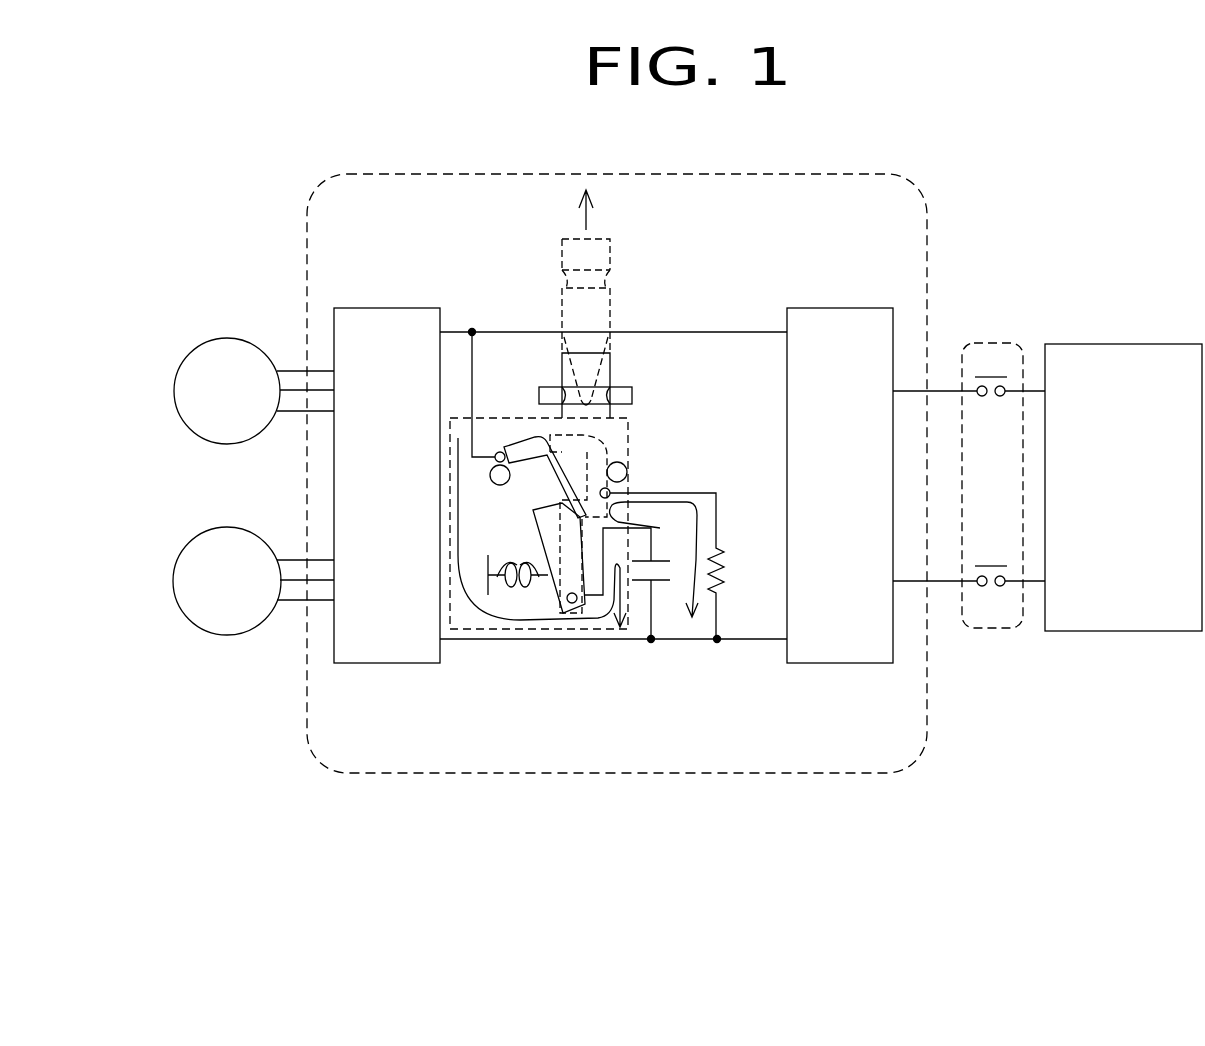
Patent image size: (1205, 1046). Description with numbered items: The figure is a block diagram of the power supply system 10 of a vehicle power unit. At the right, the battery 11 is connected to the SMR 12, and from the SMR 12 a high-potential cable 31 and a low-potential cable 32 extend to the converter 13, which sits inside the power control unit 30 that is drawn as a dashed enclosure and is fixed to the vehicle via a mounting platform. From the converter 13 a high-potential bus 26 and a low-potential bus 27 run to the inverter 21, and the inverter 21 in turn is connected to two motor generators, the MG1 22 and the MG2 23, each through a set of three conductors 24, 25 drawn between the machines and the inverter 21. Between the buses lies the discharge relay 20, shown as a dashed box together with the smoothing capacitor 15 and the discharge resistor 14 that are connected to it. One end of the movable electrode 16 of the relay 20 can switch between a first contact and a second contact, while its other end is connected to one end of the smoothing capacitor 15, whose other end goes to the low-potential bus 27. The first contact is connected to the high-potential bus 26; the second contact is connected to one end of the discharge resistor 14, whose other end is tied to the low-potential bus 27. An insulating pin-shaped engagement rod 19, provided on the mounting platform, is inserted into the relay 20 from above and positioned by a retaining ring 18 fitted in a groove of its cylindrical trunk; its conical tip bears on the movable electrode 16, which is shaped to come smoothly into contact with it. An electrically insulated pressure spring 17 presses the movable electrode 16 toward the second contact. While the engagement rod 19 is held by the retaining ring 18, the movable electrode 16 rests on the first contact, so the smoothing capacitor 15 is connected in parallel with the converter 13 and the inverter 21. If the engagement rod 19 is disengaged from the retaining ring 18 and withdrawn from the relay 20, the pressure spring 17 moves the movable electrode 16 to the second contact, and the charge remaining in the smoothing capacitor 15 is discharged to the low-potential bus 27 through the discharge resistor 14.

The power supply system 10 is at (698, 147).
The battery 11 is at (1112, 344).
The SMR 12 is at (997, 628).
The converter 13 is at (830, 309).
The discharge resistor 14 is at (724, 572).
The smoothing capacitor 15 is at (670, 606).
The movable electrode 16 is at (522, 440).
The pressure spring 17 is at (518, 565).
The retaining ring 18 is at (632, 396).
The engagement rod 19 is at (612, 371).
The discharge relay 20 is at (542, 629).
The inverter 21 is at (380, 308).
The MG1 22 is at (226, 338).
The MG2 23 is at (205, 527).
The three-phase wires to MG1 24 is at (285, 371).
The three-phase wires to MG2 25 is at (287, 560).
The high-potential bus 26 is at (728, 332).
The low-potential bus 27 is at (745, 639).
The power control unit 30 is at (473, 773).
The high-potential cable 31 is at (950, 391).
The low-potential cable 32 is at (950, 581).